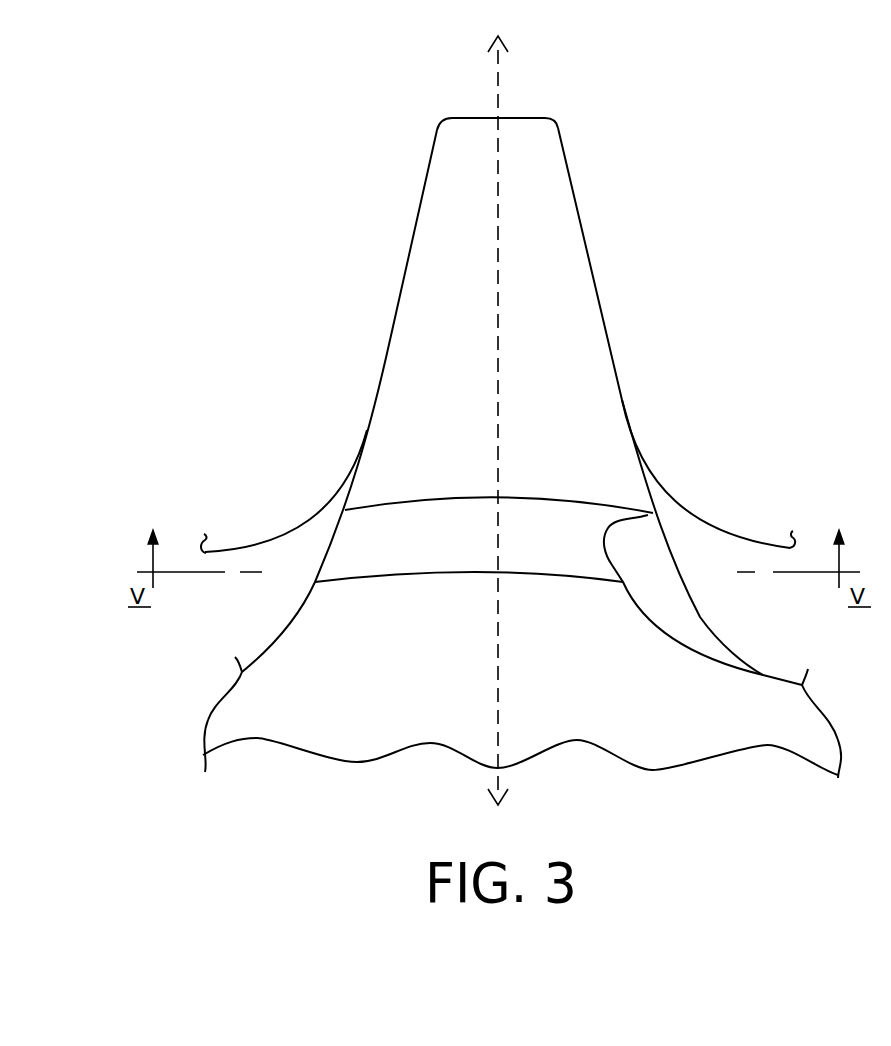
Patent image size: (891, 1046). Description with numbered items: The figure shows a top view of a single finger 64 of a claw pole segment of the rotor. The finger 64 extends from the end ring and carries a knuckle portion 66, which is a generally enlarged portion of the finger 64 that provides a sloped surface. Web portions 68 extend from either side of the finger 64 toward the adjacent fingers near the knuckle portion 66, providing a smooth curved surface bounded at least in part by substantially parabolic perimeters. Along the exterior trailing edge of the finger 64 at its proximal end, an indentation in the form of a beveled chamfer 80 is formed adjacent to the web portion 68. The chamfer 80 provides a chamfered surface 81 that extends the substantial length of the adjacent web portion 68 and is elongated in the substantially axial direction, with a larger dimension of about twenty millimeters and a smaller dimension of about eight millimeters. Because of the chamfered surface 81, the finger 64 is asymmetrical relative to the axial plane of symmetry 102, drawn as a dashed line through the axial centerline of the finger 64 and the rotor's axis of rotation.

The plane of symmetry 102 is at (497, 172).
The finger 64 is at (548, 280).
The knuckle portion 66 is at (412, 512).
The web portion 68 is at (308, 528).
The chamfer 80 is at (660, 595).
The chamfered surface 81 is at (641, 549).